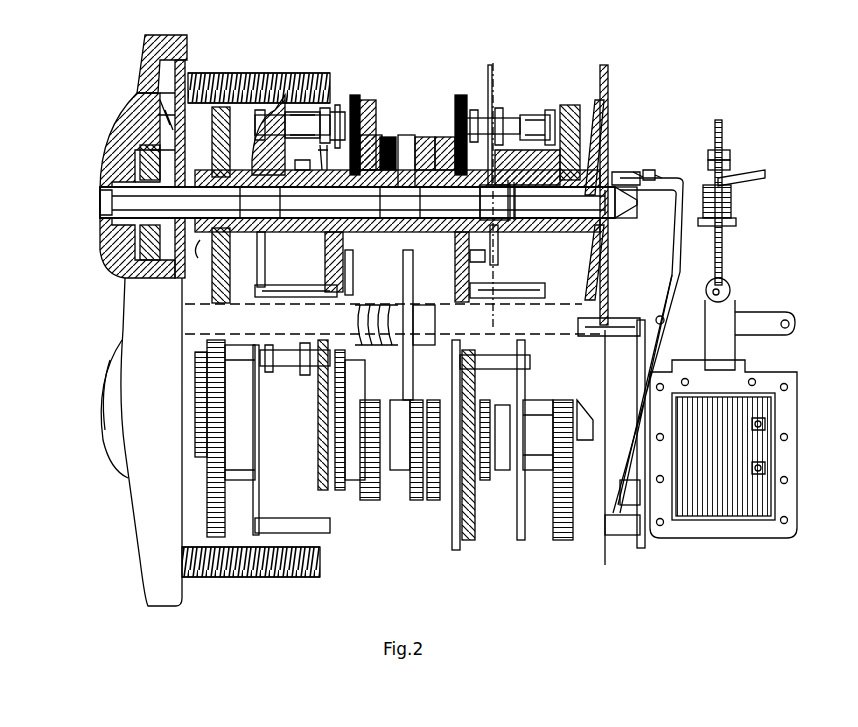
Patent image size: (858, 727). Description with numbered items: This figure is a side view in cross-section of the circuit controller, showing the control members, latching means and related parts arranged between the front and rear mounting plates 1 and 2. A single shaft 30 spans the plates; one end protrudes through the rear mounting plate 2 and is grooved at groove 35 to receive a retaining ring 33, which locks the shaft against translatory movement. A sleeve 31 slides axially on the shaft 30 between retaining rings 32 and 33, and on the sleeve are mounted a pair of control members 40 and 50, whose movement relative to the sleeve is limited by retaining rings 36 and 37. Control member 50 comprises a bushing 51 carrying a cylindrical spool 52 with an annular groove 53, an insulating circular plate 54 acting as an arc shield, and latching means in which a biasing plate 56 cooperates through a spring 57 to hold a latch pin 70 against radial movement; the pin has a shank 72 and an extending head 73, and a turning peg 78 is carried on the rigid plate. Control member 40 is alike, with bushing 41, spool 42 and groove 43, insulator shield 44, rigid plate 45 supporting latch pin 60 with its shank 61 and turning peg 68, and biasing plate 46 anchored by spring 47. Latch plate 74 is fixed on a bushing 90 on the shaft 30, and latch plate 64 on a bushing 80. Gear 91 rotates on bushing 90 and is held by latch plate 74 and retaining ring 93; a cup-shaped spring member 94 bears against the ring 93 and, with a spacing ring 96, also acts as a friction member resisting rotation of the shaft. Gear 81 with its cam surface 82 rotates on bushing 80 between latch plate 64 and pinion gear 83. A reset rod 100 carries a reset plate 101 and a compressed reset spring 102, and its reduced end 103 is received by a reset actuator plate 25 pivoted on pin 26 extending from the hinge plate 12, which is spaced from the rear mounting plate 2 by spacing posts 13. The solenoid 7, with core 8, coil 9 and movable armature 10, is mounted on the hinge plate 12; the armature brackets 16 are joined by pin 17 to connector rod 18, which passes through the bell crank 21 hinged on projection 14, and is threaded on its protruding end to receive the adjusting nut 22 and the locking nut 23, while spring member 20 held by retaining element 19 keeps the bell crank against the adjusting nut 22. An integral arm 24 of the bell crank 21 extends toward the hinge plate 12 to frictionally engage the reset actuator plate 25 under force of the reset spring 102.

The front mounting plate 1 is at (183, 60).
The rear mounting plate 2 is at (607, 75).
The solenoid 7 is at (818, 462).
The core 8 is at (790, 398).
The coil 9 is at (713, 456).
The movable armature 10 is at (796, 328).
The hinge plate 12 is at (645, 548).
The spacing posts 13 is at (625, 560).
The projection 14 is at (648, 170).
The brackets 16 is at (730, 300).
The pin 17 is at (727, 282).
The connector rod 18 is at (724, 250).
The retaining element 19 is at (736, 222).
The spring member 20 is at (731, 192).
The bell crank 21 is at (765, 172).
The adjusting nut 22 is at (730, 165).
The nut 23 is at (730, 150).
The arm 24 is at (672, 200).
The reset actuator plate 25 is at (640, 380).
The pivoting pin 26 is at (640, 490).
The shaft 30 is at (384, 197).
The sleeve 31 is at (406, 185).
The retaining ring 32 is at (280, 238).
The retaining ring 33 is at (505, 245).
The groove 35 is at (505, 197).
The retaining ring 36 is at (299, 165).
The retaining ring 37 is at (494, 267).
The control member 40 is at (381, 74).
The bushing 41 is at (345, 197).
The spool 42 is at (390, 137).
The groove 43 is at (372, 135).
The circular insulator shield 44 is at (362, 95).
The rigid plate 45 is at (335, 275).
The biasing plate 46 is at (330, 110).
The spring 47 is at (325, 262).
The control member 50 is at (425, 74).
The bushing 51 is at (455, 183).
The cylindrical spool 52 is at (420, 137).
The annular groove 53 is at (440, 140).
The circular plate 54 is at (458, 95).
The biasing plate 56 is at (488, 100).
The spring 57 is at (455, 282).
The latch pin 60 is at (330, 105).
The shank 61 is at (300, 110).
The latch plate 64 is at (262, 110).
The turning peg 68 is at (280, 297).
The latch pin 70 is at (500, 118).
The shank 72 is at (535, 115).
The extending head 73 is at (552, 115).
The latch plate 74 is at (527, 166).
The turning peg 78 is at (550, 280).
The bushing 80 is at (230, 200).
The gear 81 is at (237, 100).
The cam surface 82 is at (232, 262).
The pinion gear 83 is at (197, 255).
The bushing 90 is at (540, 190).
The gear 91 is at (570, 110).
The retaining ring 93 is at (600, 250).
The cup-shaped spring member 94 is at (590, 100).
The spacing ring 96 is at (612, 172).
The reset rod 100 is at (580, 328).
The reset plate 101 is at (403, 287).
The reset spring 102 is at (385, 340).
The reduced end 103 is at (665, 316).